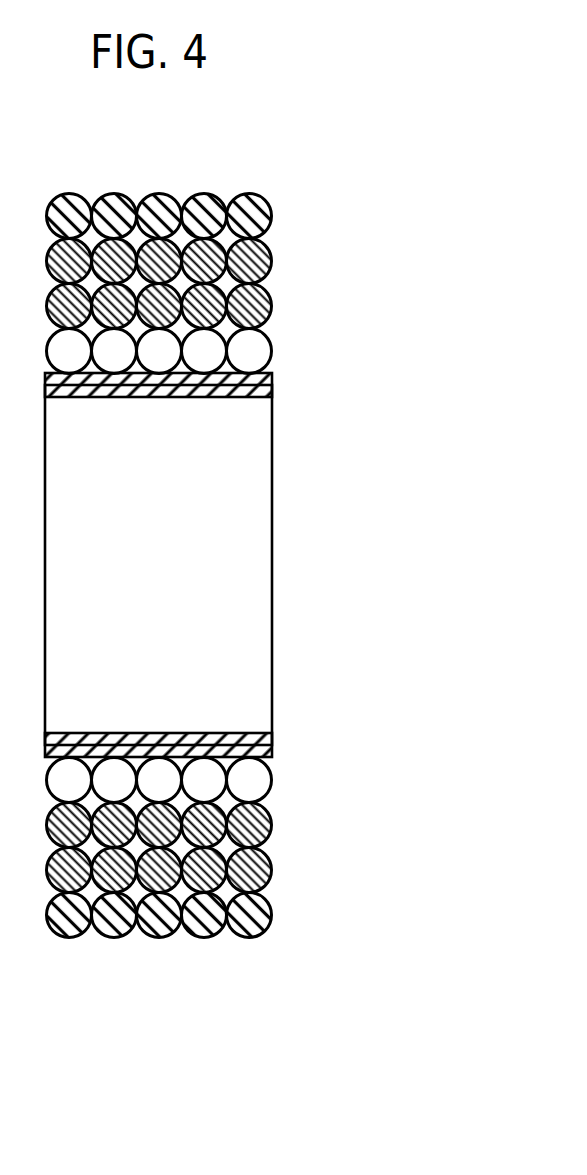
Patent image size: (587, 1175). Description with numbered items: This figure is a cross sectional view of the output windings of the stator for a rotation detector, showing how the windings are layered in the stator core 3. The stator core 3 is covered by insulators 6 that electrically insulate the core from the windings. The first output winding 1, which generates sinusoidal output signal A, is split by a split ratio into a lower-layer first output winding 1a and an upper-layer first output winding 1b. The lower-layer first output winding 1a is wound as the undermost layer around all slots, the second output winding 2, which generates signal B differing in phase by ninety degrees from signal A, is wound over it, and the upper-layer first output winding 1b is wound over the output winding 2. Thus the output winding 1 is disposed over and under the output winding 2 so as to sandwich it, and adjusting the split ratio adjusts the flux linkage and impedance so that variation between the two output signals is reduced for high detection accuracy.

The output winding 1 is at (266, 559).
The lower-layer first output winding 1a is at (220, 344).
The upper-layer first output winding 1b is at (283, 217).
The output winding 2 is at (290, 240).
The stator core 3 is at (283, 568).
The insulator 6 is at (283, 385).